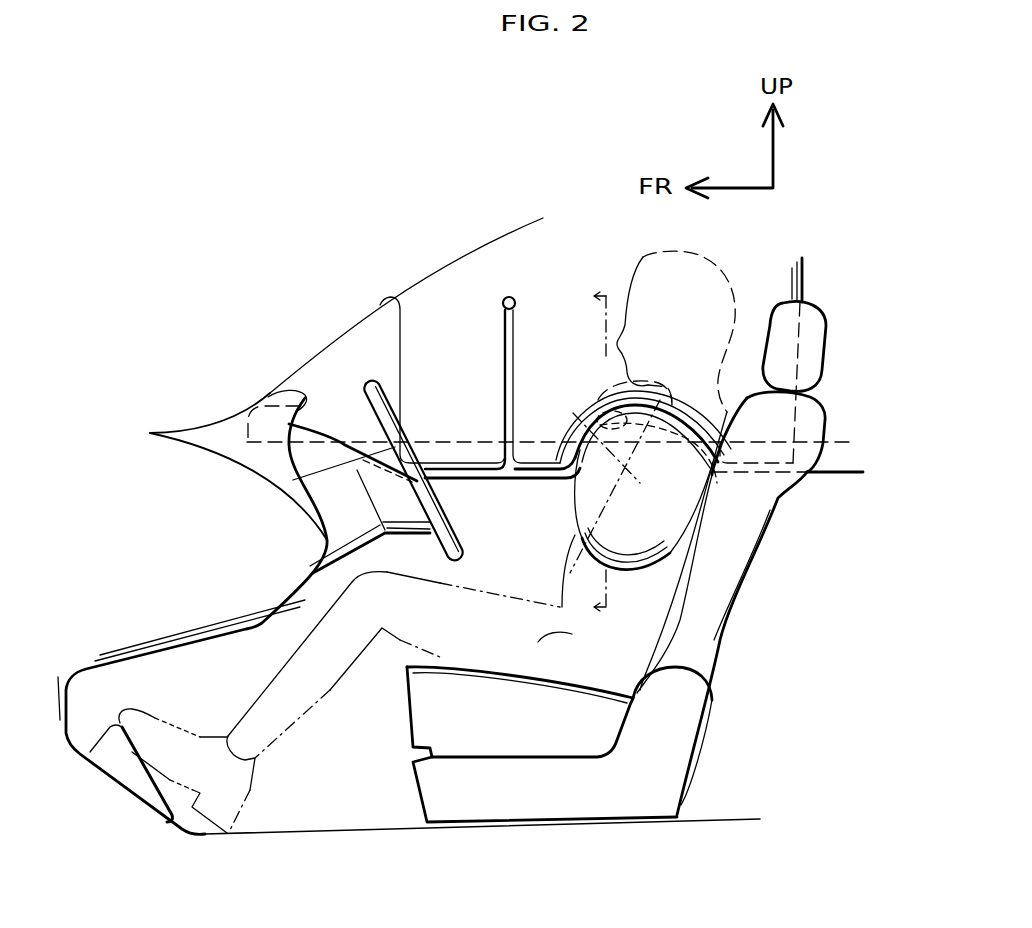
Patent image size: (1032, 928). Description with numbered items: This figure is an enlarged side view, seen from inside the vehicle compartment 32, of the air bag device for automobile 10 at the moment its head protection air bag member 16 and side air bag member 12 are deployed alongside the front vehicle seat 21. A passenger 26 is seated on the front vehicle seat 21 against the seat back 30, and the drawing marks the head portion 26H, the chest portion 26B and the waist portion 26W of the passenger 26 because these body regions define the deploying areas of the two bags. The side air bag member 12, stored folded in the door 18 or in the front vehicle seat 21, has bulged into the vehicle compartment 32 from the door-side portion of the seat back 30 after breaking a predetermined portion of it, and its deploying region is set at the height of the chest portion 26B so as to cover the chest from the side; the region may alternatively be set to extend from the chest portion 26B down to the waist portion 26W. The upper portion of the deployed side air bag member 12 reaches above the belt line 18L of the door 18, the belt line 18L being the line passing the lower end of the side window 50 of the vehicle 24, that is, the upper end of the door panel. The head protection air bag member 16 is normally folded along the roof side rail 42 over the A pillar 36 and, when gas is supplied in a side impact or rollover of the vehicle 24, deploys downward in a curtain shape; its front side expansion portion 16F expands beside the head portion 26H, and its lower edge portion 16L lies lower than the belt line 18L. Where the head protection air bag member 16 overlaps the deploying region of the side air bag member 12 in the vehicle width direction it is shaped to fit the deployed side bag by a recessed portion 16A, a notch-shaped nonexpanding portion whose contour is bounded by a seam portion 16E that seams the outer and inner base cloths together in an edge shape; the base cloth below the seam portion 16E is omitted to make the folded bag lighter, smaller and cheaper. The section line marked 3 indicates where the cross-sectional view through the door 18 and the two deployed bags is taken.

The air bag device for automobile 10 is at (523, 192).
The side air bag member 12 is at (556, 548).
The head protection air bag member 16 is at (601, 398).
The recessed portion 16A is at (593, 397).
The seam portion 16E is at (578, 422).
The front side expansion portion 16F is at (399, 337).
The lower edge portion 16L is at (492, 480).
The door 18 is at (457, 431).
The belt line 18L is at (852, 438).
The front vehicle seat 21 is at (623, 562).
The vehicle 24 is at (222, 365).
The passenger 26 is at (511, 474).
The head portion 26H is at (637, 252).
The chest portion 26B is at (640, 483).
The waist portion 26W is at (543, 640).
The seat back 30 is at (748, 565).
The vehicle compartment 32 is at (522, 560).
The A pillar 36 is at (327, 358).
The roof side rail 42 is at (613, 183).
The side window 50 is at (473, 300).
The section line of FIG. 3 is at (589, 450).